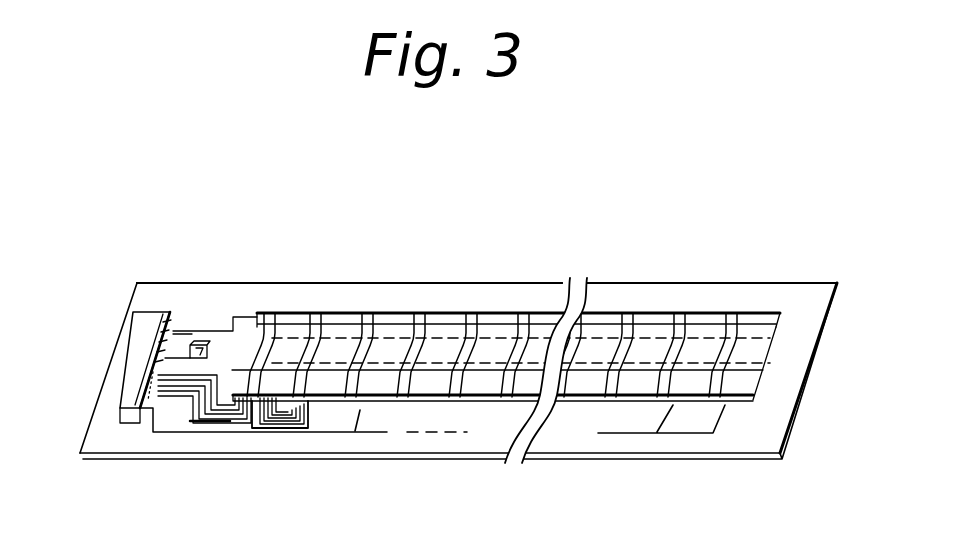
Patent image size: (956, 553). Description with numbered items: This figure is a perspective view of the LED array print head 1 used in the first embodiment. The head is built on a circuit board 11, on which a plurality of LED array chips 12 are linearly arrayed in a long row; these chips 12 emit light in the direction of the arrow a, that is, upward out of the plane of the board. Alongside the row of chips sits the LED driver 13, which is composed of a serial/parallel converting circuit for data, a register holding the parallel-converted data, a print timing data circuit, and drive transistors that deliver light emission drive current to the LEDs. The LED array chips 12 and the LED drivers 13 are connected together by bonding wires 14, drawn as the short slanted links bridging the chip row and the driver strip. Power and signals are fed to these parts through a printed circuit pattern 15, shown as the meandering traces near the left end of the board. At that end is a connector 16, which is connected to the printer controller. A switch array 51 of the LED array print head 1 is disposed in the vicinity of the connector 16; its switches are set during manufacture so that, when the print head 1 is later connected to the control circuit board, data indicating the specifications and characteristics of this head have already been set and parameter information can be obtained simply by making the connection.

The LED array print head 1 is at (789, 281).
The circuit board 11 is at (177, 283).
The LED array chips 12 is at (293, 314).
The LED driver 13 is at (572, 405).
The bonding wires 14 is at (318, 328).
The printed circuit pattern 15 is at (218, 414).
The connector 16 is at (122, 365).
The switch array 51 is at (189, 340).
The arrow a is at (260, 330).